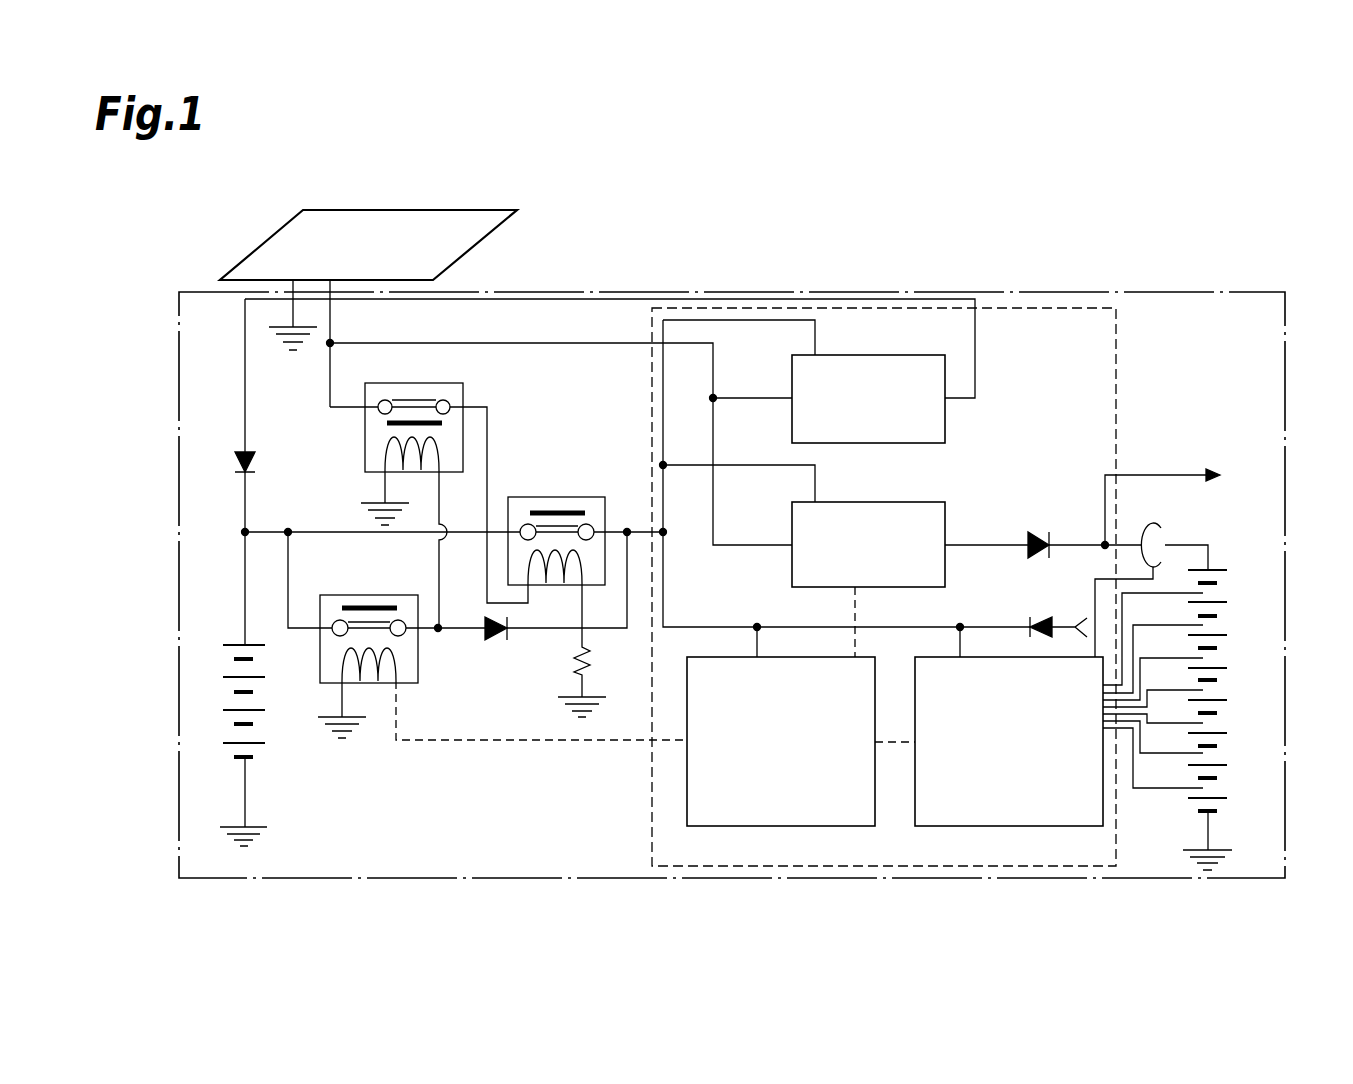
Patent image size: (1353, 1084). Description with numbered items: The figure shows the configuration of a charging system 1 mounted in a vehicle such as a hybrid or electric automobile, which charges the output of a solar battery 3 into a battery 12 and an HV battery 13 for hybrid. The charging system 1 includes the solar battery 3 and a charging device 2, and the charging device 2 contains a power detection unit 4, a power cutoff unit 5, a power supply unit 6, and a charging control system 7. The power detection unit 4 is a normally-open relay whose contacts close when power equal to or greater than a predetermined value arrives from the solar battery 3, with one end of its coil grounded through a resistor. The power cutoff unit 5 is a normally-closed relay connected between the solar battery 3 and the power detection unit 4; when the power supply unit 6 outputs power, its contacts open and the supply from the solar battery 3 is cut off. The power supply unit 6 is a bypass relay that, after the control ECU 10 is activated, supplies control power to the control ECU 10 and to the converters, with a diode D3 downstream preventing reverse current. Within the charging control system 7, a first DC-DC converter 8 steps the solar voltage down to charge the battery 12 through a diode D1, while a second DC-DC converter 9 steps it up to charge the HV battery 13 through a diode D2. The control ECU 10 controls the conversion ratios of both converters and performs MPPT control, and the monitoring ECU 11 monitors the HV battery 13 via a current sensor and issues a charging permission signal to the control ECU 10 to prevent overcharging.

The charging system 1 is at (1161, 231).
The charging device 2 is at (1285, 432).
The solar battery 3 is at (390, 210).
The power detection unit 4 is at (578, 497).
The power cutoff unit 5 is at (465, 388).
The power supply unit 6 is at (375, 595).
The charging control system 7 is at (1116, 415).
The first DC-DC converter 8 is at (945, 427).
The second DC-DC converter 9 is at (945, 521).
The control ECU 10 is at (778, 826).
The monitoring ECU 11 is at (1011, 826).
The battery 12 is at (233, 644).
The HV battery 13 is at (1220, 632).
The diode D1 is at (256, 463).
The diode D2 is at (1038, 532).
The diode D3 is at (497, 637).